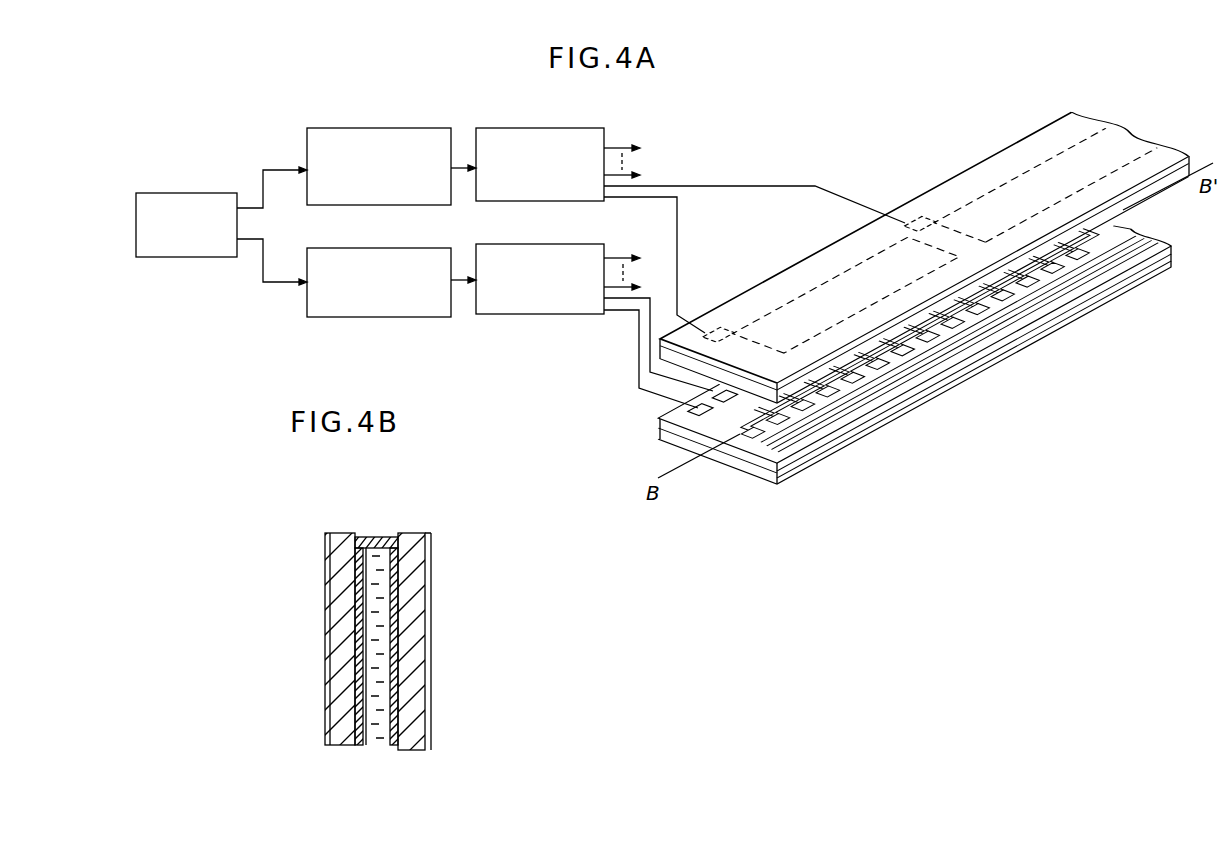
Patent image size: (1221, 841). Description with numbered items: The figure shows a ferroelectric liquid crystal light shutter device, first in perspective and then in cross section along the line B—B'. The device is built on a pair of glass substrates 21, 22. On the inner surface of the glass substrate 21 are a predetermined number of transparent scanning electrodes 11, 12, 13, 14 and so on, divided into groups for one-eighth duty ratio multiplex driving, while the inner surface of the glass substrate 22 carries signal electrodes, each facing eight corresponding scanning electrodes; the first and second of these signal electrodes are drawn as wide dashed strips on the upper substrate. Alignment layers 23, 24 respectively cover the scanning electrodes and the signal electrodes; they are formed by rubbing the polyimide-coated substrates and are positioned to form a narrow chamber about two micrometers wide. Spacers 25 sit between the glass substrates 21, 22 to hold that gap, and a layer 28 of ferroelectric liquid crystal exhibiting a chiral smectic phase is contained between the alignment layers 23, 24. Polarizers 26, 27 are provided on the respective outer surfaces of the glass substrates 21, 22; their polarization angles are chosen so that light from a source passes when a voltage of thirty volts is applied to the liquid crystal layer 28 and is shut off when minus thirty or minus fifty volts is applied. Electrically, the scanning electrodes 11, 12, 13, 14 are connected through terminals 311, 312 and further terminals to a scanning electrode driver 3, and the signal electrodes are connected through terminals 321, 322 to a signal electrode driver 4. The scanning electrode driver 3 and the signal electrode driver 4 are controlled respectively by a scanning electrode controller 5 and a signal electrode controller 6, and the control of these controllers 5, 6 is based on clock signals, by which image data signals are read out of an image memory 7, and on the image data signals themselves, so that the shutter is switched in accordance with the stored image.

In FIG. 4A, the scanning electrode driver 3 is at (545, 314).
In FIG. 4A, the signal electrode driver 4 is at (533, 128).
In FIG. 4A, the scanning electrode controller 5 is at (312, 248).
In FIG. 4A, the signal electrode controller 6 is at (401, 128).
In FIG. 4A, the image memory 7 is at (215, 193).
In FIG. 4A, the transparent scanning electrode 11 is at (750, 437).
In FIG. 4B, the transparent scanning electrode 11 is at (358, 564).
In FIG. 4A, the transparent scanning electrode 12 is at (774, 422).
In FIG. 4B, the transparent scanning electrode 12 is at (358, 596).
In FIG. 4A, the transparent scanning electrode 13 is at (798, 408).
In FIG. 4B, the transparent scanning electrode 13 is at (358, 619).
In FIG. 4A, the transparent scanning electrode 14 is at (822, 393).
In FIG. 4B, the transparent scanning electrode 14 is at (358, 649).
In FIG. 4A, the glass substrate 21 is at (960, 371).
In FIG. 4B, the glass substrate 21 is at (344, 533).
In FIG. 4A, the glass substrate 22 is at (1192, 158).
In FIG. 4B, the glass substrate 22 is at (418, 535).
In FIG. 4B, the alignment layer 23 is at (377, 645).
In FIG. 4B, the alignment layer 24 is at (396, 671).
In FIG. 4B, the spacer 25 is at (360, 540).
In FIG. 4A, the polarizer 26 is at (1048, 332).
In FIG. 4B, the polarizer 26 is at (325, 540).
In FIG. 4A, the polarizer 27 is at (1167, 160).
In FIG. 4B, the polarizer 27 is at (430, 536).
In FIG. 4B, the ferroelectric liquid crystal layer 28 is at (366, 738).
In FIG. 4A, the terminal 311 is at (700, 413).
In FIG. 4A, the terminal 312 is at (714, 394).
In FIG. 4A, the terminal 321 is at (720, 327).
In FIG. 4A, the terminal 322 is at (916, 224).